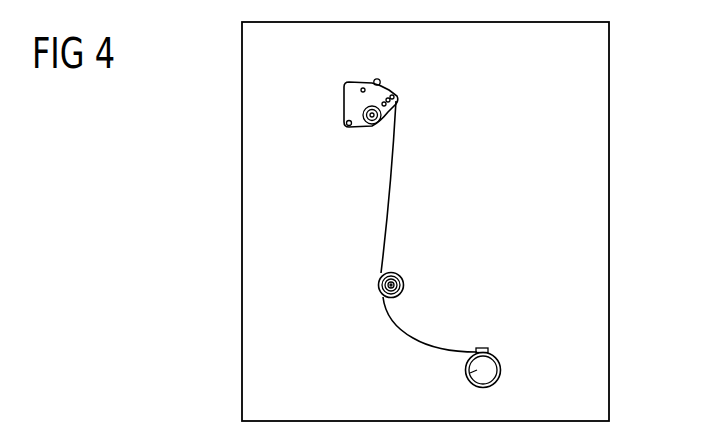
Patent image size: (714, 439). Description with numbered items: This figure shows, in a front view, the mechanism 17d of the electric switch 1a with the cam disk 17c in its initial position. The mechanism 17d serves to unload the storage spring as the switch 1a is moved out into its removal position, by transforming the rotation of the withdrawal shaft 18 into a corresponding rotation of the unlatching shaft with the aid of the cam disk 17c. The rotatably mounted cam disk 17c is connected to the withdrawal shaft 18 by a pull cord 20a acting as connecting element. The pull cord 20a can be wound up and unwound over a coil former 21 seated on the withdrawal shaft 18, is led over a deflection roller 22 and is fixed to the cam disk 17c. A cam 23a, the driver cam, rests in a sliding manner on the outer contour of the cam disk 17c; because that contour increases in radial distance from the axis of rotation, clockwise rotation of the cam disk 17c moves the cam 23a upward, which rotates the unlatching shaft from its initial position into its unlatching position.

The electric switch 1a is at (609, 213).
The cam disk 17c is at (345, 103).
The mechanism 17d is at (538, 168).
The withdrawal shaft 18 is at (470, 373).
The pull cord 20a is at (389, 190).
The coil former 21 is at (500, 372).
The deflection roller 22 is at (379, 284).
The cam 23a is at (381, 82).